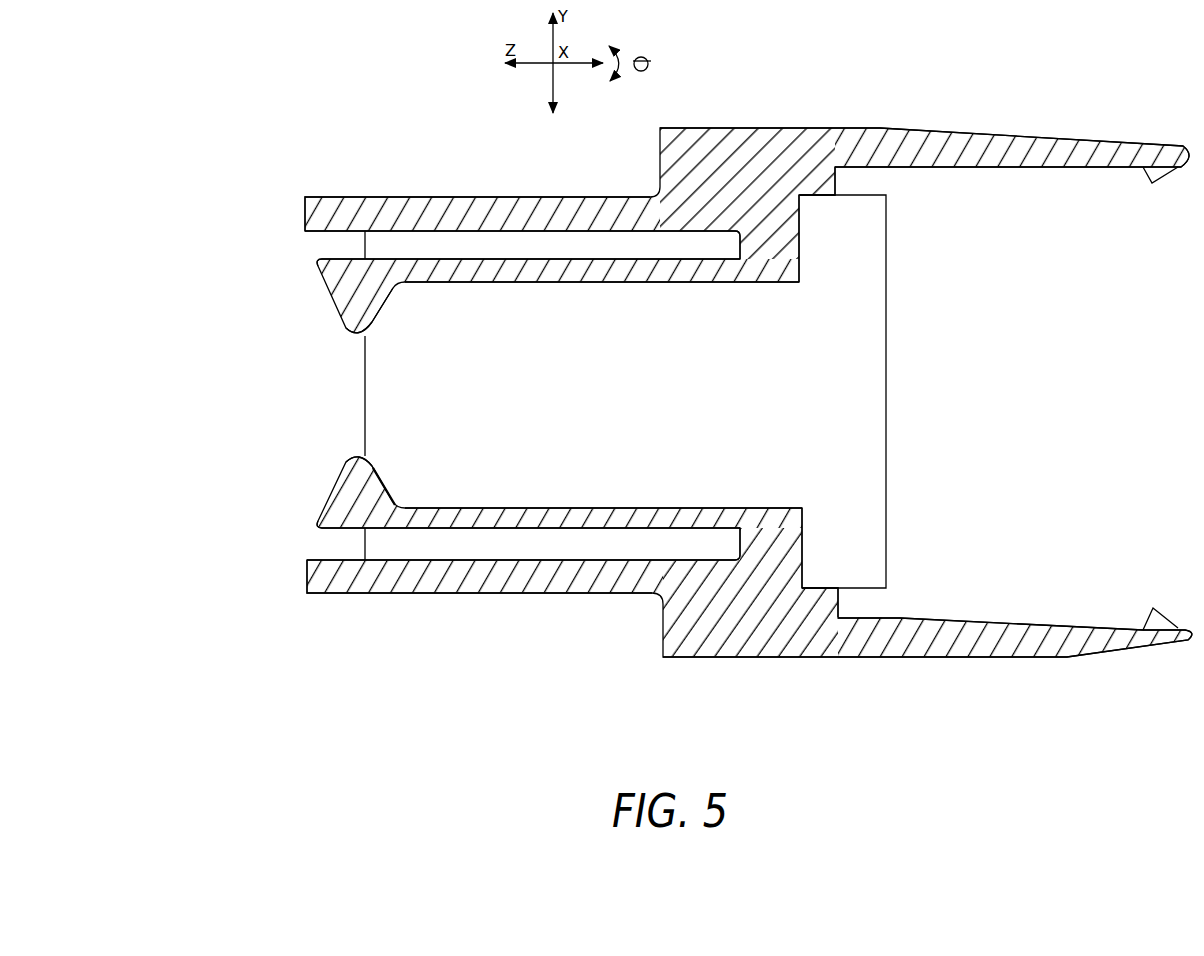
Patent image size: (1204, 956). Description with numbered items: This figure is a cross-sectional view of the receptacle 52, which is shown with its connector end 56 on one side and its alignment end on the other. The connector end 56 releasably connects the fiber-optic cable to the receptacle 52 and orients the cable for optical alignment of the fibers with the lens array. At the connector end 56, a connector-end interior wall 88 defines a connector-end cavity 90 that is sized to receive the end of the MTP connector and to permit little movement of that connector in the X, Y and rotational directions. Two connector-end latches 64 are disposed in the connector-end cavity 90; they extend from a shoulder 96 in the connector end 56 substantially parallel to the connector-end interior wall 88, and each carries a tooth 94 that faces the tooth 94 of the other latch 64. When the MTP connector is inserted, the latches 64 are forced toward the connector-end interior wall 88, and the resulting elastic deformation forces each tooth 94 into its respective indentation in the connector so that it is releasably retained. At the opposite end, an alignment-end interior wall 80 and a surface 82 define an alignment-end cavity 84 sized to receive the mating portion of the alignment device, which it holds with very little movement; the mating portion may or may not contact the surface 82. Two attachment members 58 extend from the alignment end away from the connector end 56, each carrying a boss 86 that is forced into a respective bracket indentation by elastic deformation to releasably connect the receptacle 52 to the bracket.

The receptacle 52 is at (307, 123).
The connector end 56 is at (366, 197).
The attachment member 58 is at (1052, 135).
The connector-end latch 64 is at (310, 264).
The alignment-end interior wall 80 is at (813, 198).
The surface 82 is at (800, 237).
The alignment-end cavity 84 is at (855, 385).
The boss 86 is at (1170, 174).
The connector-end interior wall 88 is at (510, 232).
The connector-end cavity 90 is at (390, 382).
The tooth 94 is at (348, 333).
The shoulder 96 is at (738, 236).